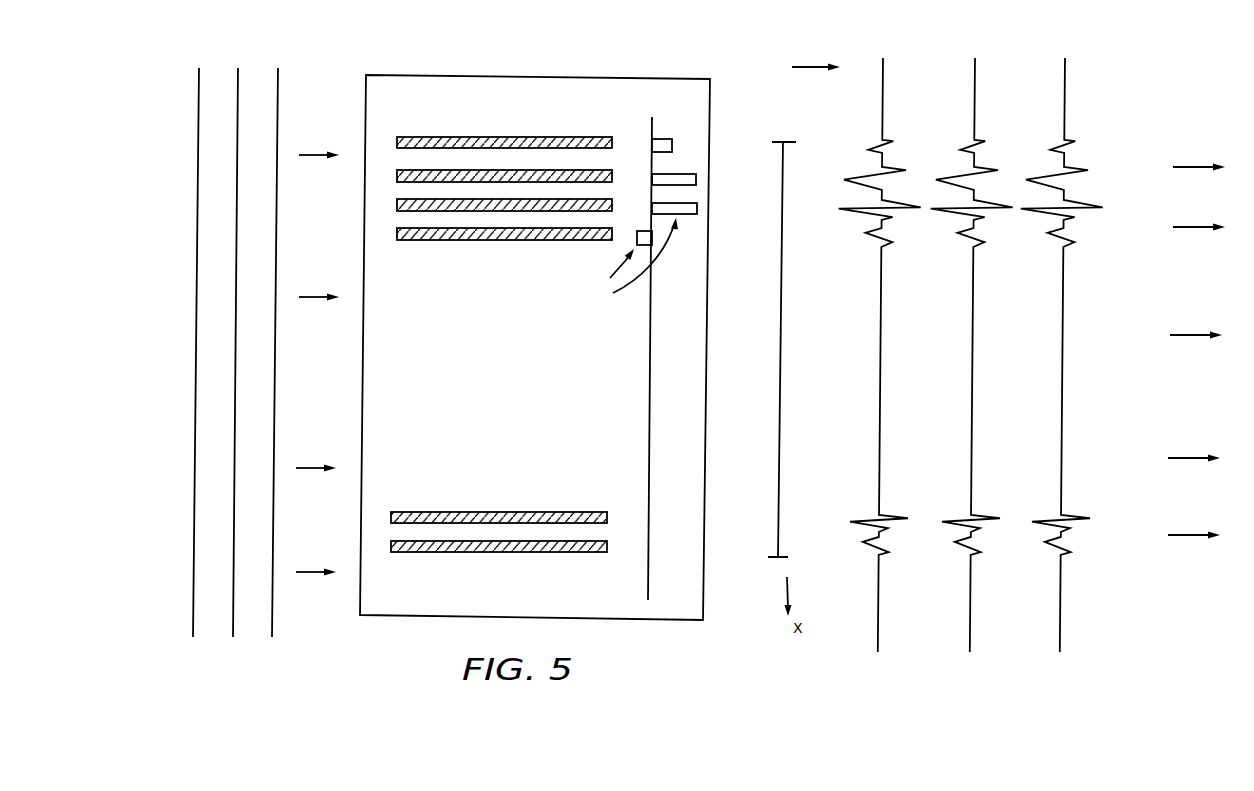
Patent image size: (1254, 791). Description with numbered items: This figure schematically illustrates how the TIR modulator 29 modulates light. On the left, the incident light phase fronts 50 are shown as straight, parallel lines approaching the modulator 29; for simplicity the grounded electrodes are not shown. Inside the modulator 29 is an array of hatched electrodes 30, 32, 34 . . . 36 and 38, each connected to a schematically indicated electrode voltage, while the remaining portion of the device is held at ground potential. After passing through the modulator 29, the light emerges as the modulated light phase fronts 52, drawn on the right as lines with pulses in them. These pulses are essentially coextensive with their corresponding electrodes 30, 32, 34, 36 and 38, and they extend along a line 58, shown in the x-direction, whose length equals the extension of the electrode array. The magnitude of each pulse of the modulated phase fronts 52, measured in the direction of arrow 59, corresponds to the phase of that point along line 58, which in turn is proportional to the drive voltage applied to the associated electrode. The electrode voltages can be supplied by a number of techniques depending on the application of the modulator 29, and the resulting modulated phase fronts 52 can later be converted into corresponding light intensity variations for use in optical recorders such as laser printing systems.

The TIR modulator 29 is at (524, 69).
The electrode 30 is at (495, 137).
The electrode 32 is at (499, 170).
The electrode 34 is at (600, 199).
The electrode 36 is at (494, 512).
The electrode 38 is at (470, 552).
The incident light phase fronts 50 is at (287, 85).
The modulated light phase fronts 52 is at (1079, 106).
The line 58 is at (783, 355).
The arrow 59 is at (808, 66).